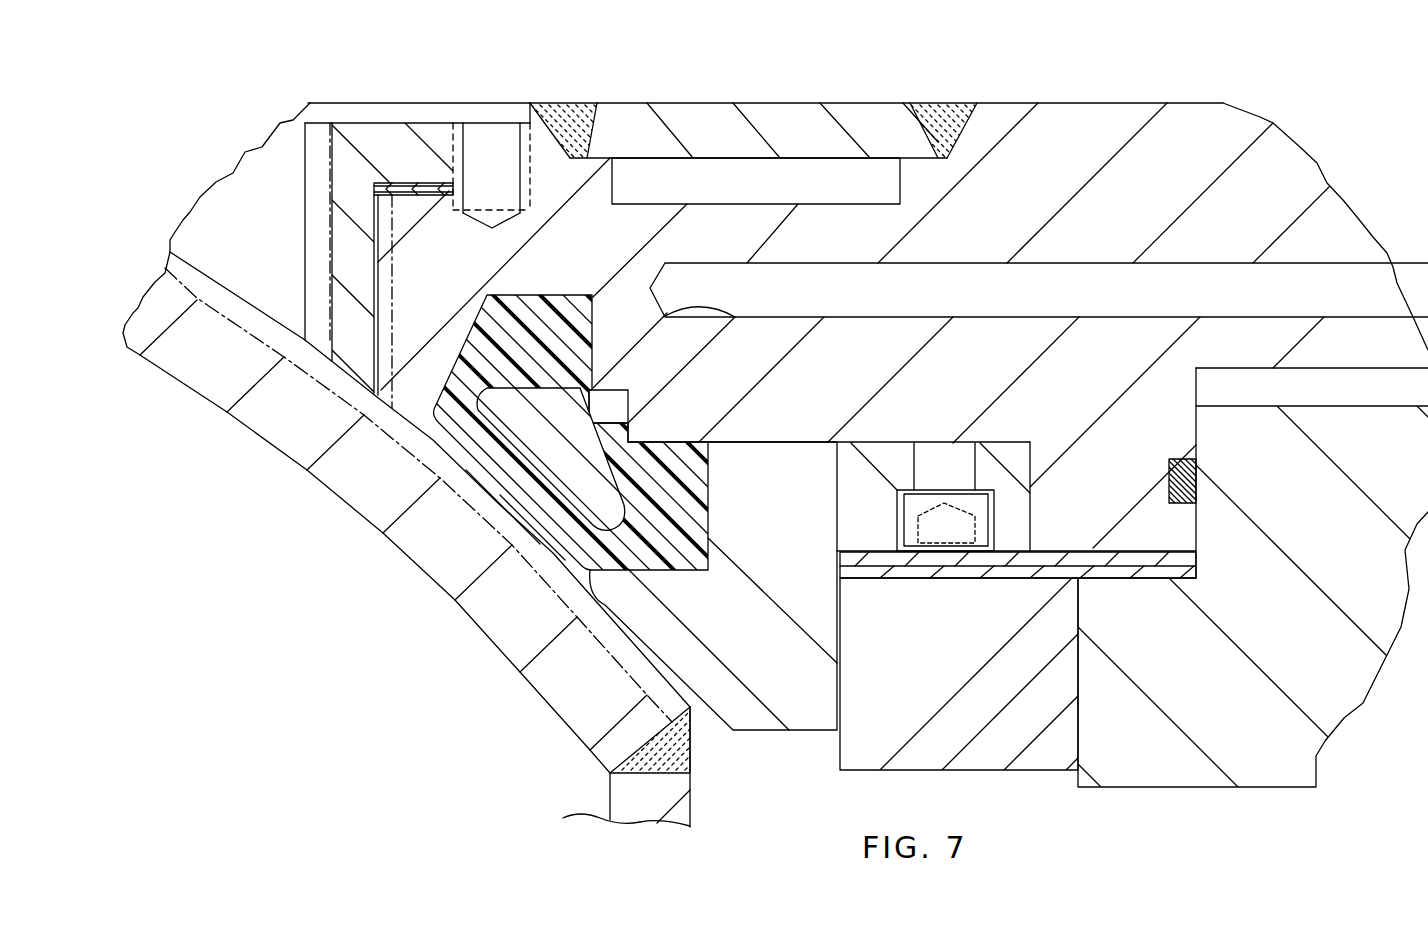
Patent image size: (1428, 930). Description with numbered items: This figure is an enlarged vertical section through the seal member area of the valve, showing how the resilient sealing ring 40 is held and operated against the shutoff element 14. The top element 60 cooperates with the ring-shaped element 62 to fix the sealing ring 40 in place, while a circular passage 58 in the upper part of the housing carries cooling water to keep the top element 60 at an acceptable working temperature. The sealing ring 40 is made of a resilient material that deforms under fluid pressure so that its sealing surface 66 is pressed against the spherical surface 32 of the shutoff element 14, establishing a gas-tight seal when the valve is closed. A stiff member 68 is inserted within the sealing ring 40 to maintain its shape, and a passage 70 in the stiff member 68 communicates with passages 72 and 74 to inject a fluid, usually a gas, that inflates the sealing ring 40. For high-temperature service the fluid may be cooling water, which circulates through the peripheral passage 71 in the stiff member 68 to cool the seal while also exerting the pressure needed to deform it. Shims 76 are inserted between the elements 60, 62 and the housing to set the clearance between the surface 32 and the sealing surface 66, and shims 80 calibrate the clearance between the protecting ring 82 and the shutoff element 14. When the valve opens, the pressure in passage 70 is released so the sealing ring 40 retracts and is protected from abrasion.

The shutoff element 14 is at (177, 441).
The spherical surface 32 is at (547, 560).
The sealing ring 40 is at (473, 447).
The circular passage 58 is at (771, 193).
The top element 60 is at (1185, 127).
The ring-shaped element 62 is at (752, 712).
The sealing surface 66 is at (567, 458).
The stiff member 68 is at (570, 497).
The passage 70 is at (574, 469).
The peripheral passage 71 is at (618, 407).
The passage 72 is at (677, 372).
The passage 74 is at (866, 303).
The shims 76 is at (1194, 577).
The shims 80 is at (412, 182).
The protecting ring 82 is at (320, 238).